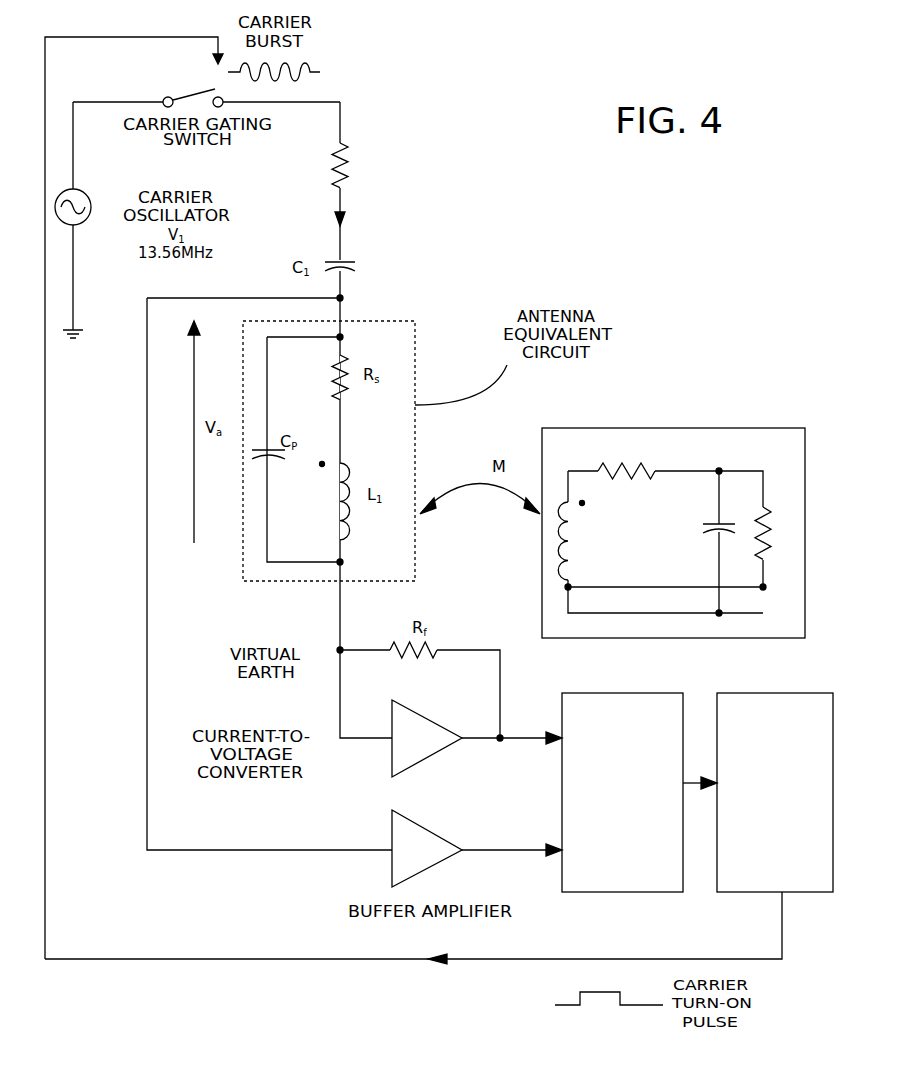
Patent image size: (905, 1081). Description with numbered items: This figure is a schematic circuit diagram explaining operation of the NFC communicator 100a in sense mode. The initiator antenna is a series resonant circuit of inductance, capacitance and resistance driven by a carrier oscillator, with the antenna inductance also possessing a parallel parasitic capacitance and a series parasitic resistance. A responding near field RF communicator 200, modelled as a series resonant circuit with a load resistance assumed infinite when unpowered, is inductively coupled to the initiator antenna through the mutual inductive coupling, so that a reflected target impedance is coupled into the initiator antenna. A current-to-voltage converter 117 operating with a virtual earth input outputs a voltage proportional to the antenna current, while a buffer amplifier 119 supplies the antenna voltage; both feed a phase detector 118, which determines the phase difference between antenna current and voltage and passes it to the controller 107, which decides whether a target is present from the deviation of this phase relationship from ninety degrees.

The NFC communicator 100a is at (345, 141).
The responding near field RF communicator 200 is at (772, 427).
The current-to-voltage converter 117 is at (453, 702).
The buffer amplifier 119 is at (460, 813).
The phase detector 118 is at (643, 895).
The controller 107 is at (799, 693).